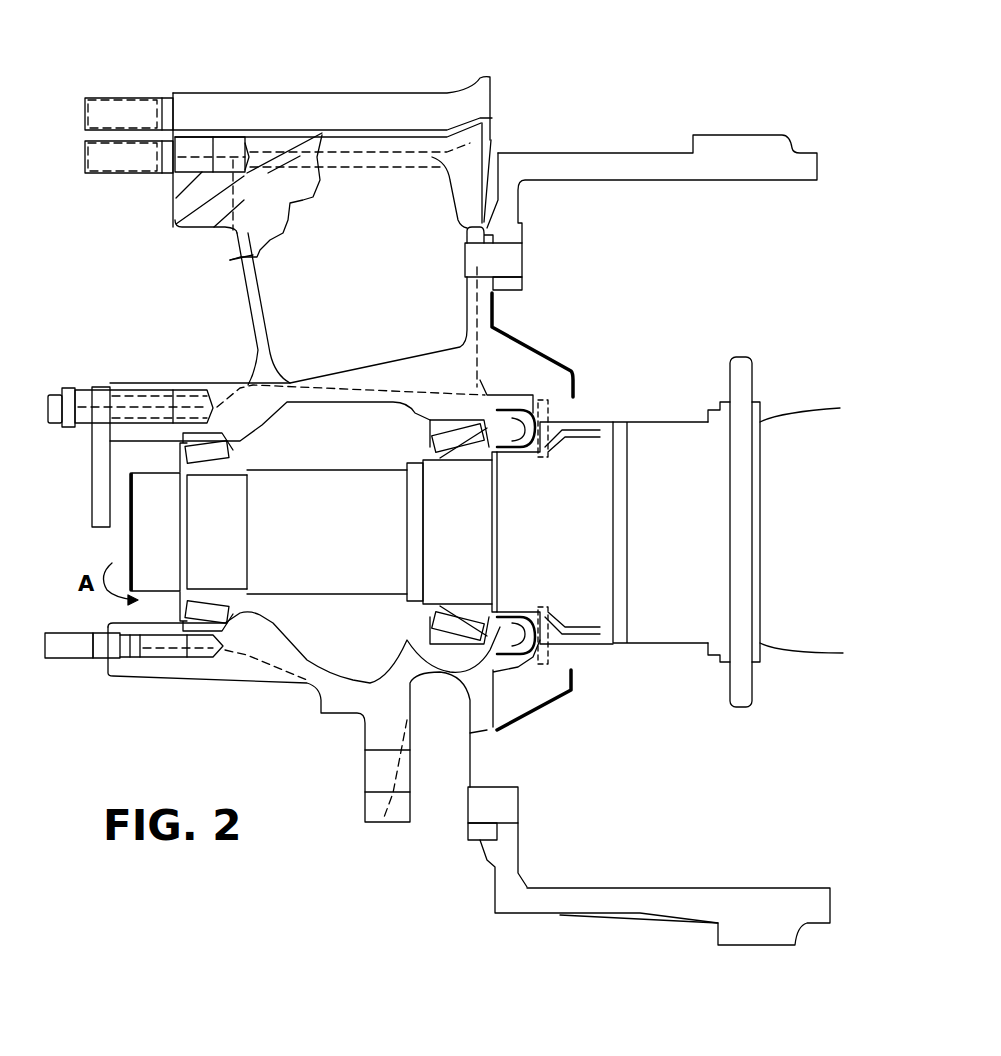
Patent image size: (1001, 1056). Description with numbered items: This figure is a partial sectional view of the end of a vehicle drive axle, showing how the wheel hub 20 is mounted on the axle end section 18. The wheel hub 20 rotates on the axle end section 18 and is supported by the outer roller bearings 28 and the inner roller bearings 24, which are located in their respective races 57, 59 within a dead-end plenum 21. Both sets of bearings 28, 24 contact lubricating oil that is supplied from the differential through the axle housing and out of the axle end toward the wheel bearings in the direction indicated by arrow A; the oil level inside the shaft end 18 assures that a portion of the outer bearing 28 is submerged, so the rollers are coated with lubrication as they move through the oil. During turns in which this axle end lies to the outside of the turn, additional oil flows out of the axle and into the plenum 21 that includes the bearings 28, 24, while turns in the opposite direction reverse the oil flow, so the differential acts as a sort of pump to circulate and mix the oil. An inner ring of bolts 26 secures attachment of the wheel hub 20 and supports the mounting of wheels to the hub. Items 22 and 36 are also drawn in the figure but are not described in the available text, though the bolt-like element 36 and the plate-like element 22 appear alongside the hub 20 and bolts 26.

The axle end section 18 is at (325, 487).
The wheel hub 20 is at (313, 703).
The plenum 21 is at (340, 621).
The brake rotor plate 22 is at (100, 482).
The inner roller bearings 24 is at (487, 447).
The bolts 26 is at (80, 387).
The outer roller bearings 28 is at (200, 467).
The bolt 36 is at (128, 97).
The race 57 is at (250, 587).
The race 59 is at (453, 460).